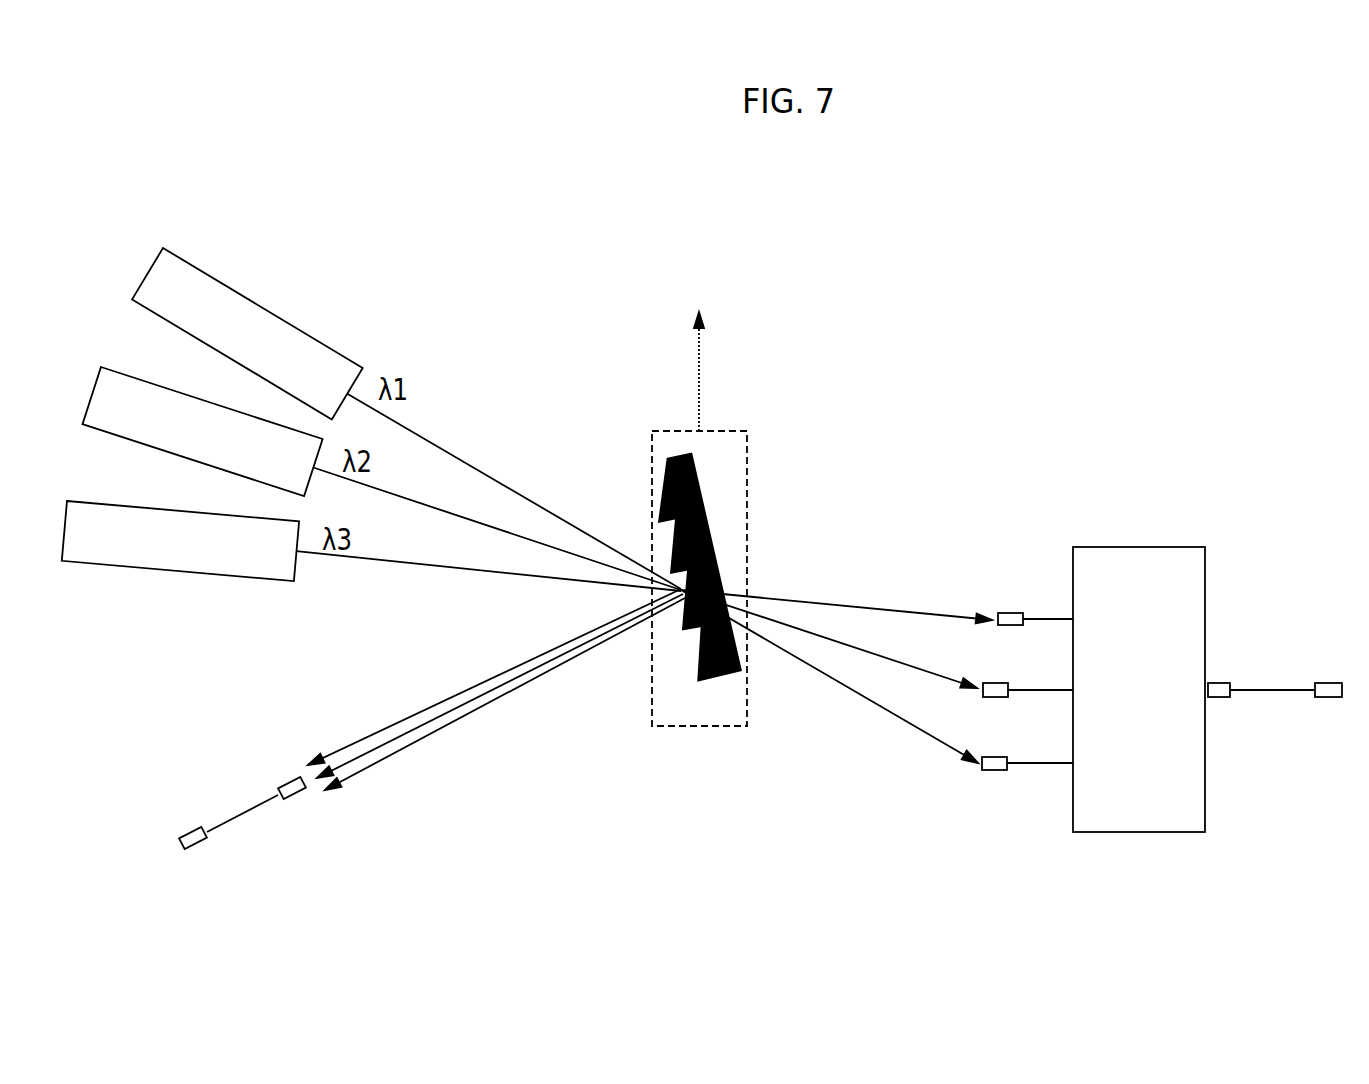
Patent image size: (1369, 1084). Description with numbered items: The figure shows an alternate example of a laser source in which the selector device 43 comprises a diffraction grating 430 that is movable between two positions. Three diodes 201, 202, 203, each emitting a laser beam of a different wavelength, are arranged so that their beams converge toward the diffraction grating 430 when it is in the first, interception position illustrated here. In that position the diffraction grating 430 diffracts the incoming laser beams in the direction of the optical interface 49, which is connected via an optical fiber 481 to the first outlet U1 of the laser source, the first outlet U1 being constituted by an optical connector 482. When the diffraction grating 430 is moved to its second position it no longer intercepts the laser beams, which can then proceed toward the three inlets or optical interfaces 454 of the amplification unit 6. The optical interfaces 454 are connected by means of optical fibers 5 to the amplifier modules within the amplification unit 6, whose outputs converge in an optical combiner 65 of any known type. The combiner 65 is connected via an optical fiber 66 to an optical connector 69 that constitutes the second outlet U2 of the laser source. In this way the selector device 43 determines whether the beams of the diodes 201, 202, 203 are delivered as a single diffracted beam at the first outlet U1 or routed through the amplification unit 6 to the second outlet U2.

The diode 201 is at (212, 289).
The diode 202 is at (142, 377).
The diode 203 is at (101, 548).
The selector device 43 is at (754, 535).
The diffraction grating 430 is at (664, 455).
The optical interfaces 454 is at (1006, 612).
The optical fibers 5 is at (1043, 615).
The amplification unit 6 is at (1180, 528).
The optical combiner 65 is at (1212, 700).
The optical fiber 66 is at (1263, 683).
The optical connector 69 is at (1323, 683).
The second outlet U2 is at (1327, 715).
The optical interface 49 is at (300, 800).
The optical fiber 481 is at (242, 813).
The optical connector 482 is at (198, 850).
The first outlet U1 is at (177, 827).